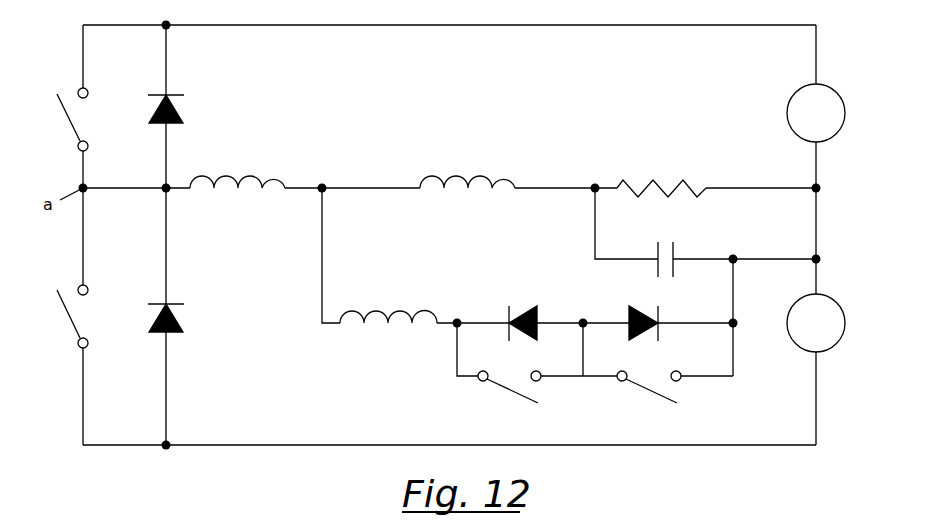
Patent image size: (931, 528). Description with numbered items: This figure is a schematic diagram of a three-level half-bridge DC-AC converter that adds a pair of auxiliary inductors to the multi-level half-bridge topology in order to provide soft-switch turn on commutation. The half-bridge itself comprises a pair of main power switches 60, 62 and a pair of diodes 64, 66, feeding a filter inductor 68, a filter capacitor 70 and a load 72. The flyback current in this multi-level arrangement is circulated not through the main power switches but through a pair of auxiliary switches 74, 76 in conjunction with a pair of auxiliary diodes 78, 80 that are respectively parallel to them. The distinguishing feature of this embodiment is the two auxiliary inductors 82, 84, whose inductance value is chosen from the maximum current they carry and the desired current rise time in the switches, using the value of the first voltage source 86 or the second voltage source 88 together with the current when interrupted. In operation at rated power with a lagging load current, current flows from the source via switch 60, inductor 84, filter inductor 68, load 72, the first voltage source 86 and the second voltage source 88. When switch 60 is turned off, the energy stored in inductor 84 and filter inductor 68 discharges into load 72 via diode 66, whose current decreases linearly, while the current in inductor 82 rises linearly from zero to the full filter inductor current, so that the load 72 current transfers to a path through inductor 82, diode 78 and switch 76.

The main power switch 60 is at (66, 117).
The main power switch 62 is at (66, 312).
The diode 64 is at (176, 95).
The diode 66 is at (176, 304).
The filter inductor 68 is at (468, 190).
The filter capacitor 70 is at (678, 253).
The load 72 is at (653, 180).
The auxiliary switch 74 is at (511, 398).
The auxiliary switch 76 is at (651, 398).
The auxiliary diode 78 is at (505, 313).
The auxiliary diode 80 is at (662, 313).
The auxiliary inductor 82 is at (387, 325).
The auxiliary inductor 84 is at (241, 190).
The voltage source V1 86 is at (845, 97).
The voltage source V2 88 is at (843, 306).